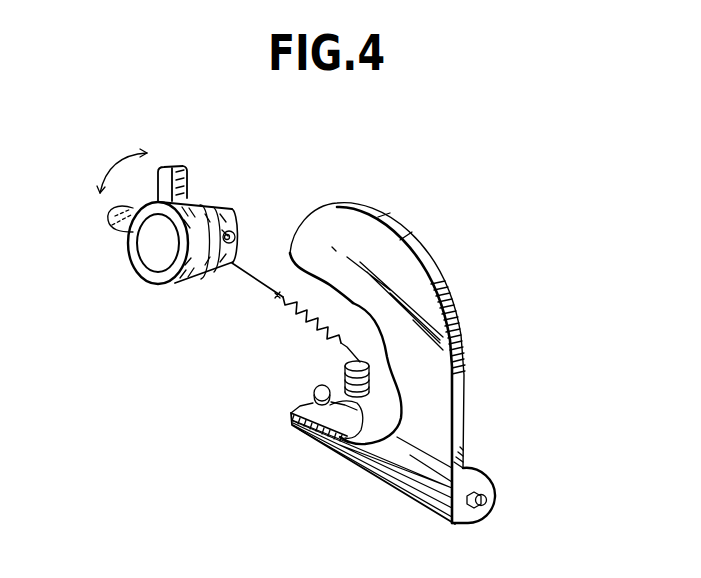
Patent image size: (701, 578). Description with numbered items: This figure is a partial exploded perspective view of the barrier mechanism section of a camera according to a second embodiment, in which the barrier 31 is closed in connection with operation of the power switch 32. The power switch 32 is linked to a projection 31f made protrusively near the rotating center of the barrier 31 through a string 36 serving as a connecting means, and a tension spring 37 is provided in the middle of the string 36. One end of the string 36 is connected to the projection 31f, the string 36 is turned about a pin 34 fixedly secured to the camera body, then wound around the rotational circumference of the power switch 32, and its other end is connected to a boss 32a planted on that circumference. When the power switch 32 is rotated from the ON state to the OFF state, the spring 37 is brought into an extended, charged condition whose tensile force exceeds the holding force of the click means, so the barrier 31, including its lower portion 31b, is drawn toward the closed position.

The barrier 31 is at (393, 245).
The bottom flange of lever body 31b is at (292, 406).
The projection 31f is at (312, 396).
The power switch 32 is at (178, 178).
The boss 32a is at (235, 237).
The pin 34 is at (365, 372).
The string 36 is at (250, 280).
The tension spring 37 is at (313, 330).